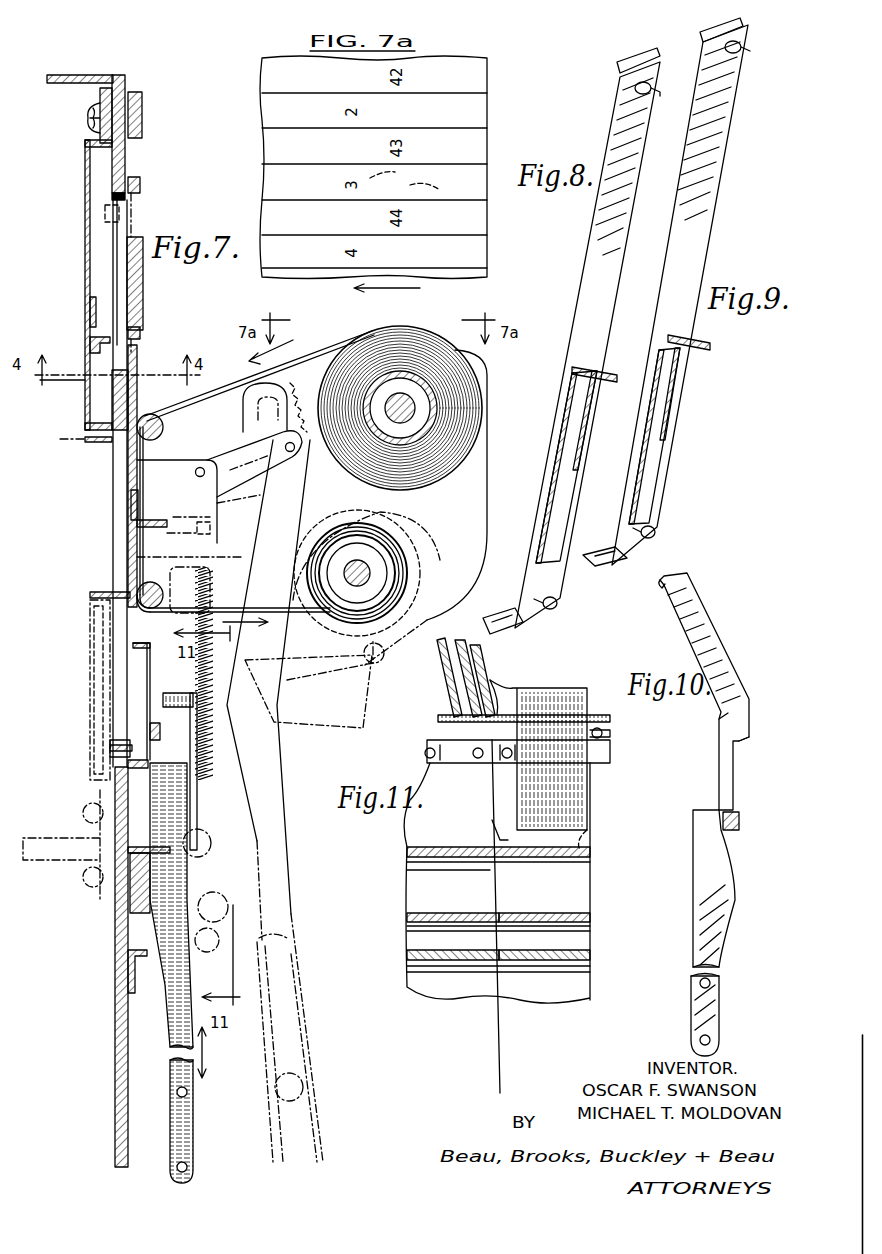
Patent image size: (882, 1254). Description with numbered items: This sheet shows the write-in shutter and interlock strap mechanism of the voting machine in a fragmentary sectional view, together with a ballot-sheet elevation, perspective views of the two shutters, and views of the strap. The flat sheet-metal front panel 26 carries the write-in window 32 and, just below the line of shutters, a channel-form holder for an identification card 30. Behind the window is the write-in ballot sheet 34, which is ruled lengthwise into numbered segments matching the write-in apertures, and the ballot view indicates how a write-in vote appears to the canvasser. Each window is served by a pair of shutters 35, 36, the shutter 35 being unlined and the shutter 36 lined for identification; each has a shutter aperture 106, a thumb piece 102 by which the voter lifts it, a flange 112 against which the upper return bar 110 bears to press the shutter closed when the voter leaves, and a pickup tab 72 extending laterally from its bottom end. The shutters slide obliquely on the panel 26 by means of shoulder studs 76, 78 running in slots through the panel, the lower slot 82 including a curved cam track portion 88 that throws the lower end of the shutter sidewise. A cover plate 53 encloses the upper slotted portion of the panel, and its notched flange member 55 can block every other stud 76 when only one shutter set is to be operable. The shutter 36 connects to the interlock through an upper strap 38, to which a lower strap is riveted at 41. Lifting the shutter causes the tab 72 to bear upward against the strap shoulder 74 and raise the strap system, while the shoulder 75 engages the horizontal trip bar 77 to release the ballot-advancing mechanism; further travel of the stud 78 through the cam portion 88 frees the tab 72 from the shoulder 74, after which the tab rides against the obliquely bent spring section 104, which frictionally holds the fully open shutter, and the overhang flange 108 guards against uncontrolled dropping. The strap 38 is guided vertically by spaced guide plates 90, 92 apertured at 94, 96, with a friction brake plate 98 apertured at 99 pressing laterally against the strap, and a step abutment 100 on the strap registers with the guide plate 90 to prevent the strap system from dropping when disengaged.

In FIG. 7, the front panel 26 is at (125, 153).
In FIG. 11, the front panel 26 is at (497, 883).
In FIG. 7, the identification card 30 is at (97, 648).
In FIG. 7, the write-in window 32 is at (127, 372).
In FIG. 7, the write-in ballot sheet 34 is at (318, 332).
In FIG. 7A, the write-in ballot sheet 34 is at (462, 58).
In FIG. 7, the shutter 35 is at (138, 402).
In FIG. 9, the shutter 35 is at (712, 242).
In FIG. 11, the shutter 35 is at (476, 762).
In FIG. 8, the shutter 36 is at (583, 247).
In FIG. 11, the shutter 36 is at (460, 755).
In FIG. 7, the upper strap 38 is at (172, 1020).
In FIG. 10, the upper strap 38 is at (725, 870).
In FIG. 11, the upper strap 38 is at (500, 1050).
In FIG. 7, the rivet 41 is at (180, 1163).
In FIG. 10, the rivet 41 is at (710, 1038).
In FIG. 7, the cover plate 53 is at (85, 392).
In FIG. 7, the flange member 55 is at (93, 320).
In FIG. 7, the pickup tab 72 is at (147, 768).
In FIG. 8, the pickup tab 72 is at (500, 612).
In FIG. 9, the pickup tab 72 is at (593, 553).
In FIG. 10, the shoulder 74 is at (744, 740).
In FIG. 7, the shoulder 75 is at (192, 728).
In FIG. 10, the shoulder 75 is at (719, 719).
In FIG. 7, the shoulder stud 76 is at (100, 207).
In FIG. 8, the shoulder stud 76 is at (652, 89).
In FIG. 9, the shoulder stud 76 is at (742, 48).
In FIG. 7, the trip bar 77 is at (161, 728).
In FIG. 11, the trip bar 77 is at (606, 733).
In FIG. 7, the shoulder stud 78 is at (112, 745).
In FIG. 8, the shoulder stud 78 is at (560, 610).
In FIG. 9, the shoulder stud 78 is at (658, 528).
In FIG. 11, the lower slot 82 is at (485, 665).
In FIG. 11, the cam track portion 88 is at (495, 688).
In FIG. 7, the guide plate 90 is at (140, 883).
In FIG. 11, the guide plate 90 is at (585, 840).
In FIG. 7, the guide plate 92 is at (137, 985).
In FIG. 11, the guide plate 92 is at (558, 950).
In FIG. 11, the aperture 94 is at (462, 847).
In FIG. 11, the aperture 96 is at (468, 950).
In FIG. 7, the friction brake plate 98 is at (205, 915).
In FIG. 11, the friction brake plate 98 is at (544, 913).
In FIG. 11, the aperture 99 is at (456, 913).
In FIG. 7, the step abutment 100 is at (147, 839).
In FIG. 10, the step abutment 100 is at (742, 818).
In FIG. 11, the step abutment 100 is at (508, 840).
In FIG. 7, the thumb piece 102 is at (86, 441).
In FIG. 8, the thumb piece 102 is at (610, 375).
In FIG. 9, the thumb piece 102 is at (708, 346).
In FIG. 10, the obliquely bent section 104 is at (728, 615).
In FIG. 11, the obliquely bent section 104 is at (478, 625).
In FIG. 8, the shutter aperture 106 is at (573, 490).
In FIG. 9, the shutter aperture 106 is at (672, 452).
In FIG. 10, the overhang flange 108 is at (660, 581).
In FIG. 7, the return bar 110 is at (142, 110).
In FIG. 7, the flange 112 is at (141, 187).
In FIG. 8, the flange 112 is at (633, 58).
In FIG. 9, the flange 112 is at (705, 32).